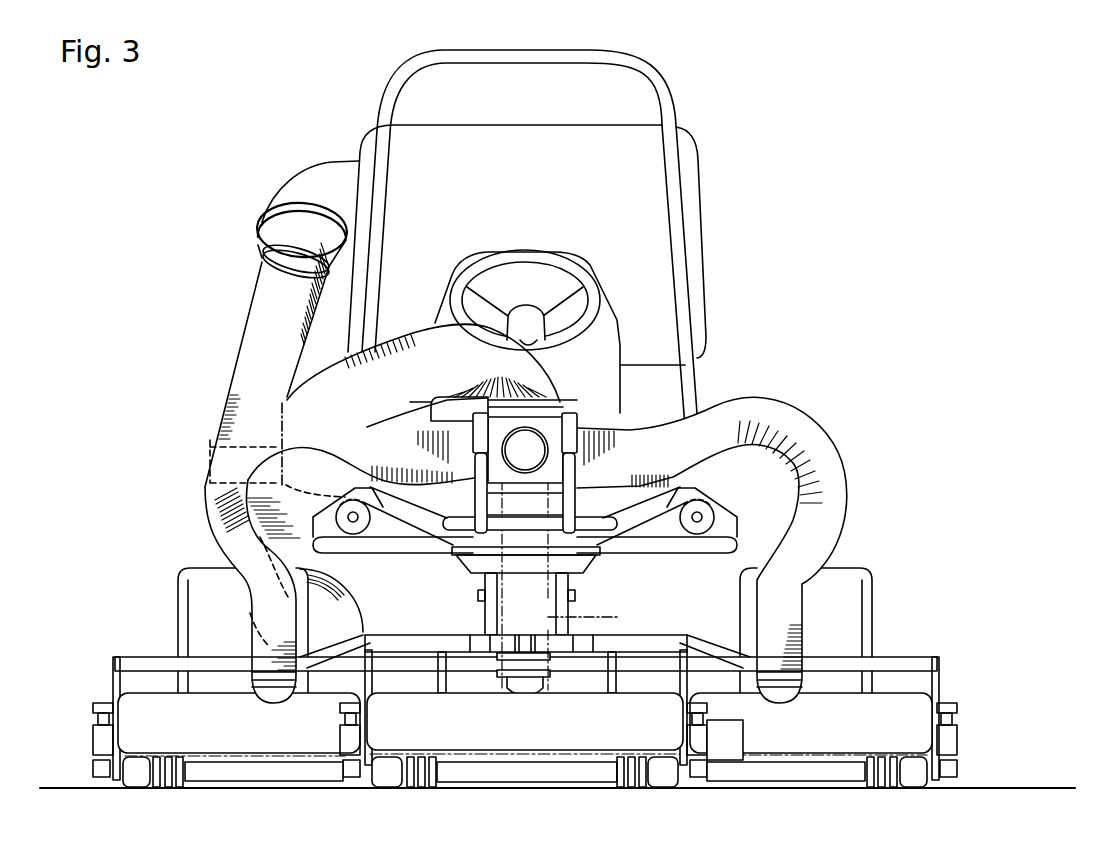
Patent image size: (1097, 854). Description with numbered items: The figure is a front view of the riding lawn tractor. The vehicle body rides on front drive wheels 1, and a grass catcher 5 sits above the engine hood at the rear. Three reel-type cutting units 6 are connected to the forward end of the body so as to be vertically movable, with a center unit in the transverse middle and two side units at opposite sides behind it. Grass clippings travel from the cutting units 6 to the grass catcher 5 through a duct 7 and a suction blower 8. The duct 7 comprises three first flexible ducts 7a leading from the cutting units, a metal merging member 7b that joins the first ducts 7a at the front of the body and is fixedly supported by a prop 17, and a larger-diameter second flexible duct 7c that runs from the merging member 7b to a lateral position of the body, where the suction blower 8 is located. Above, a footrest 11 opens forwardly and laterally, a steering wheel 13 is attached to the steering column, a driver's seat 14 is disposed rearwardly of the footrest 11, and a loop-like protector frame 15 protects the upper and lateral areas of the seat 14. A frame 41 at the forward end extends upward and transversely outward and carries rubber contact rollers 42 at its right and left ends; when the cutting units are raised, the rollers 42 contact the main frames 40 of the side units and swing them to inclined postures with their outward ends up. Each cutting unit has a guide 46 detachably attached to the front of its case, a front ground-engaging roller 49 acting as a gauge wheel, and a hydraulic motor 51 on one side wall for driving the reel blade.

The front drive wheels 1 is at (195, 612).
The grass catcher 5 is at (700, 178).
The reel-type cutting units 6 is at (132, 656).
The duct 7 is at (666, 419).
The first flexible ducts 7a is at (230, 467).
The merging member 7b is at (555, 425).
The second flexible duct 7c is at (423, 327).
The suction blower 8 is at (212, 545).
The footrest 11 is at (722, 532).
The steering wheel 13 is at (525, 250).
The driver's seat 14 is at (605, 317).
The protector frame 15 is at (672, 110).
The prop 17 is at (482, 534).
The main frames 40 is at (217, 667).
The frame 41 is at (438, 535).
The contact rollers 42 is at (372, 533).
The guide 46 is at (140, 708).
The front ground-engaging roller 49 is at (258, 757).
The hydraulic motor 51 is at (727, 742).